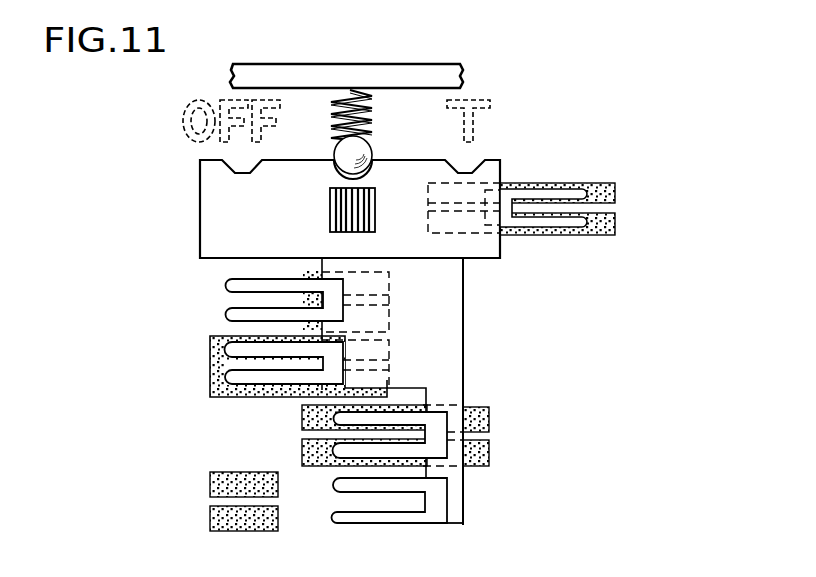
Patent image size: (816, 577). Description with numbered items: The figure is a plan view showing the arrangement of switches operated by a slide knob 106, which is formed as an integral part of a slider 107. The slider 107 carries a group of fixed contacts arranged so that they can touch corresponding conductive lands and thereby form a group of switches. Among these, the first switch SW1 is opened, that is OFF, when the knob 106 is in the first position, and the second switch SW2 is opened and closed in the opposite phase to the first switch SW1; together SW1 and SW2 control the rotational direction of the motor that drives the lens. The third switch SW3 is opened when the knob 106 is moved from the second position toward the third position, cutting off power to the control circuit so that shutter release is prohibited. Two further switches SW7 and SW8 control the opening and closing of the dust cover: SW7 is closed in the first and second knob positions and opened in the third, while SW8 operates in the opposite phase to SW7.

The slider 107 is at (208, 202).
The slide knob 106 is at (330, 207).
The first switch SW1 is at (622, 207).
The second switch SW2 is at (228, 299).
The third switch SW3 is at (207, 364).
The switch for dust cover SW7 is at (490, 437).
The switch for dust cover SW8 is at (468, 500).